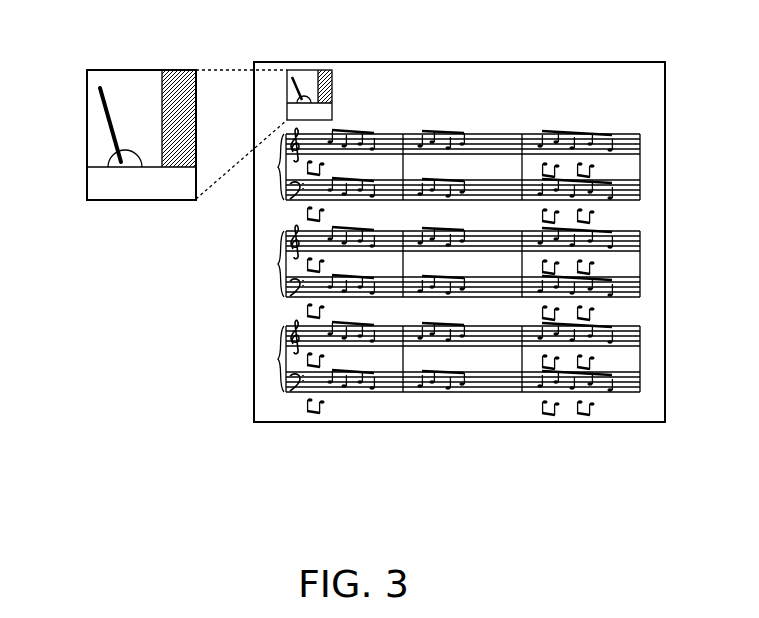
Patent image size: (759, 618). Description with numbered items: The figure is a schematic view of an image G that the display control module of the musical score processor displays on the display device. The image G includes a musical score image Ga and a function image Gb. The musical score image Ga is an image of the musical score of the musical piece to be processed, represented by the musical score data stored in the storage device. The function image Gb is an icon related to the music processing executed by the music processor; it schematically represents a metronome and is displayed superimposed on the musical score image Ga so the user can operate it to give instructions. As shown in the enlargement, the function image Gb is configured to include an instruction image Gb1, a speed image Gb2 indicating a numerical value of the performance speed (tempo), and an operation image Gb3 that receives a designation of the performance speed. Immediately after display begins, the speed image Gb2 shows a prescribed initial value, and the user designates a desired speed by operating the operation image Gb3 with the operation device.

The image G is at (667, 180).
The musical score image Ga is at (272, 428).
The function image Gb is at (310, 70).
The instruction image Gb1 is at (108, 118).
The speed image Gb2 is at (122, 182).
The operation image Gb3 is at (181, 70).